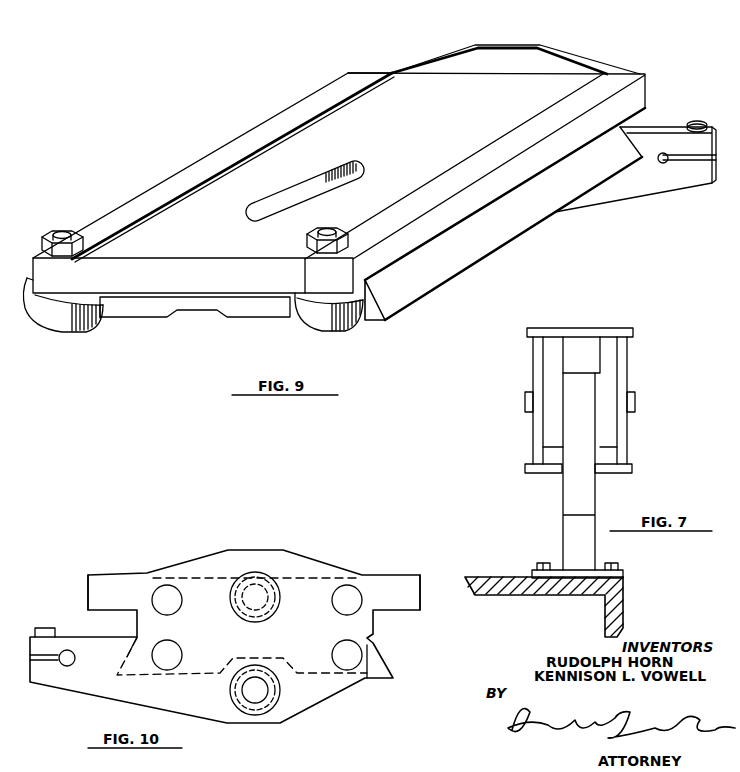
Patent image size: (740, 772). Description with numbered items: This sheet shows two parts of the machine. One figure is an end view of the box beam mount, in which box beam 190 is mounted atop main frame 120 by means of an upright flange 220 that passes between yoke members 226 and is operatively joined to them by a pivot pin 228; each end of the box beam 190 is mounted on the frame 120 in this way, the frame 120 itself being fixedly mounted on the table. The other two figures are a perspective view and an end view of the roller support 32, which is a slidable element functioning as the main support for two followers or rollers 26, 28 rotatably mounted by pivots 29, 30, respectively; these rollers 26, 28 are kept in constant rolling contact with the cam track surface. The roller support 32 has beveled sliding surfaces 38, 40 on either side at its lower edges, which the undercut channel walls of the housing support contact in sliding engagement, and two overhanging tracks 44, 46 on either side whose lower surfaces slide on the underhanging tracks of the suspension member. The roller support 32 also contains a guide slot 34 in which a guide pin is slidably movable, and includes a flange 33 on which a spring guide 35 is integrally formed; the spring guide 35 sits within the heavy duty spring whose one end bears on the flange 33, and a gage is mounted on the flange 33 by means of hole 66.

In FIG. 9, the roller 26 is at (68, 330).
In FIG. 9, the roller 28 is at (335, 326).
In FIG. 9, the pivot 29 is at (62, 222).
In FIG. 9, the pivot 30 is at (330, 225).
In FIG. 9, the roller support 32 is at (190, 200).
In FIG. 9, the flange 33 is at (663, 130).
In FIG. 10, the flange 33 is at (312, 692).
In FIG. 9, the guide slot 34 is at (353, 160).
In FIG. 10, the spring guide 35 is at (248, 574).
In FIG. 9, the beveled sliding surface 38 is at (375, 300).
In FIG. 10, the beveled sliding surface 38 is at (392, 668).
In FIG. 9, the beveled sliding surface 40 is at (505, 235).
In FIG. 10, the beveled sliding surface 40 is at (103, 637).
In FIG. 9, the overhanging track 44 is at (640, 93).
In FIG. 10, the overhanging track 44 is at (113, 587).
In FIG. 9, the overhanging track 46 is at (137, 200).
In FIG. 10, the overhanging track 46 is at (397, 583).
In FIG. 9, the hole 66 is at (660, 163).
In FIG. 10, the hole 66 is at (73, 664).
In FIG. 7, the main frame 120 is at (624, 588).
In FIG. 7, the box beam 190 is at (628, 356).
In FIG. 7, the upright flange 220 is at (563, 486).
In FIG. 7, the yoke members 226 is at (617, 384).
In FIG. 7, the pivot pin 228 is at (636, 401).